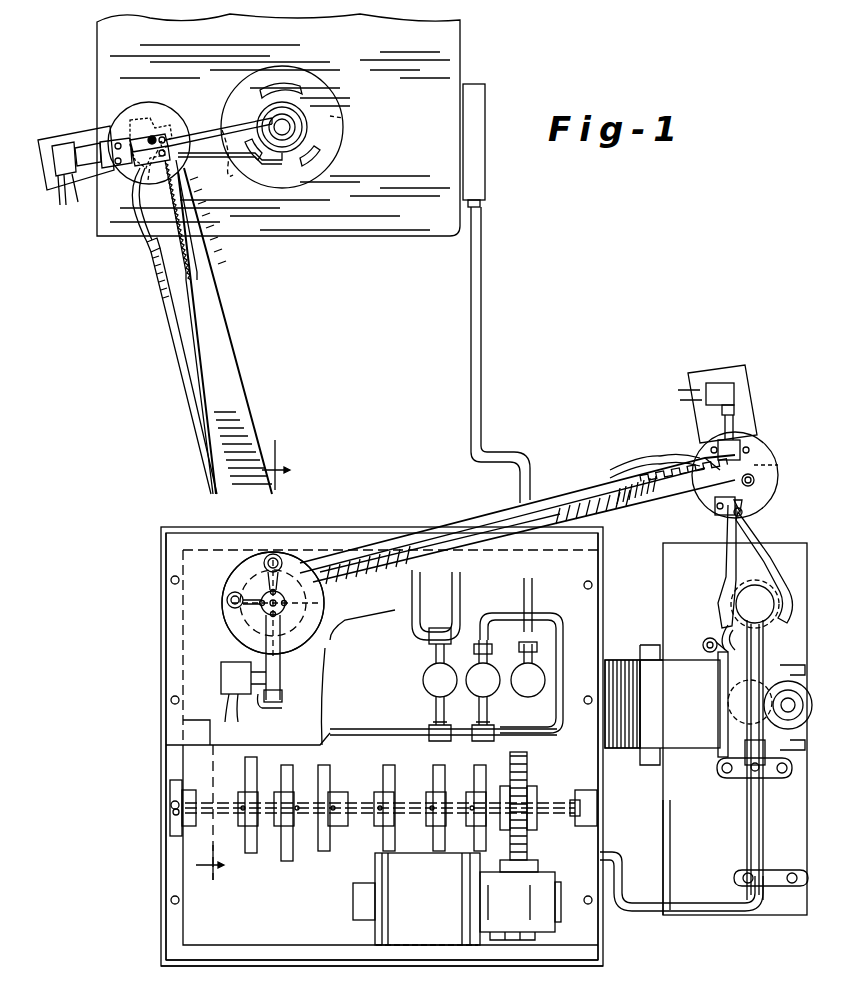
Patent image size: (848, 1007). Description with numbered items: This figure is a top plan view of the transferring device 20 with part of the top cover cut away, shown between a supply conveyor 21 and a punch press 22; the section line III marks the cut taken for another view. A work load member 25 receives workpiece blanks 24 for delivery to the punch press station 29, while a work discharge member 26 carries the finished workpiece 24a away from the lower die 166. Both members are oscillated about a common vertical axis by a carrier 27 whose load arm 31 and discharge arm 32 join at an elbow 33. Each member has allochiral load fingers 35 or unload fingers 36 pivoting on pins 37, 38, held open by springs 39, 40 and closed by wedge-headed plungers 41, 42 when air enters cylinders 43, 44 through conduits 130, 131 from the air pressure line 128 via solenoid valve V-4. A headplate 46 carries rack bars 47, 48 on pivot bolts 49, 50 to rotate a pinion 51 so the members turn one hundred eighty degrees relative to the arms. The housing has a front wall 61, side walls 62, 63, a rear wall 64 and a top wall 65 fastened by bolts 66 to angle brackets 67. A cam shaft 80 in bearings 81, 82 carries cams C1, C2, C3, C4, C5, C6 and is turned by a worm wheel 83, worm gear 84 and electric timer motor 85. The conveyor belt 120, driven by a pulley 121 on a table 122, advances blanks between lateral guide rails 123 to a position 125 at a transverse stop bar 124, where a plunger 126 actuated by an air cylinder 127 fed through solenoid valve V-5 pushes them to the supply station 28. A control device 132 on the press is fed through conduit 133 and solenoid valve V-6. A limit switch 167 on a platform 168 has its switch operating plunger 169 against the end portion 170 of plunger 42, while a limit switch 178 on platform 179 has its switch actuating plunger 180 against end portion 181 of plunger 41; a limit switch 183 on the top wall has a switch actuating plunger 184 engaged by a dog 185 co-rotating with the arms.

The transferring device 20 is at (158, 881).
The supply conveyor 21 is at (620, 768).
The punch press 22 is at (466, 46).
The workpiece blank 24 is at (785, 668).
The finished workpiece 24a is at (300, 132).
The work load member 25 is at (768, 458).
The work discharge member 26 is at (127, 104).
The carrier 27 is at (290, 512).
The supply station 28 is at (733, 585).
The punch press station 29 is at (305, 110).
The load arm 31 is at (582, 480).
The discharge arm 32 is at (244, 360).
The elbow 33 is at (223, 612).
The load fingers 35 is at (797, 540).
The unload fingers 36 is at (219, 163).
The pin 37 is at (726, 535).
The pin 38 is at (226, 127).
The spring 39 is at (760, 516).
The spring 40 is at (250, 140).
The wedge-headed plunger 41 is at (735, 476).
The wedge-headed plunger 42 is at (155, 180).
The cylinder 43 is at (712, 440).
The cylinder 44 is at (110, 160).
The headplate 46 is at (235, 642).
The rack bar 47 is at (500, 515).
The rack bar 48 is at (188, 358).
The pivot bolt 49 is at (265, 555).
The pivot bolt 50 is at (222, 600).
The pinion 51 is at (151, 138).
The front wall 61 is at (385, 963).
The side wall 62 is at (164, 762).
The side wall 63 is at (598, 940).
The rear wall 64 is at (376, 530).
The top wall 65 is at (180, 612).
The bolts 66 is at (180, 708).
The angle brackets 67 is at (162, 940).
The cam shaft 80 is at (222, 795).
The bearing 81 is at (160, 805).
The bearing 82 is at (600, 802).
The worm wheel 83 is at (548, 746).
The worm gear 84 is at (540, 862).
The electric timer motor 85 is at (375, 868).
The conveyor belt 120 is at (714, 757).
The pulley 121 is at (632, 660).
The table 122 is at (668, 826).
The lateral guide rails 123 is at (800, 778).
The transverse stop bar 124 is at (726, 670).
The position 125 is at (724, 725).
The plunger 126 is at (720, 640).
The air cylinder 127 is at (748, 822).
The air pressure line 128 is at (342, 730).
The conduit 130 is at (660, 460).
The conduit 131 is at (143, 232).
The control device 132 is at (486, 165).
The conduit 133 is at (482, 305).
The lower die 166 is at (343, 116).
The limit switch 167 is at (65, 140).
The platform 168 is at (50, 180).
The switch operating plunger 169 is at (67, 145).
The end portion 170 is at (88, 148).
The limit switch 178 is at (728, 382).
The platform 179 is at (708, 370).
The switch actuating plunger 180 is at (738, 412).
The end portion 181 is at (740, 420).
The limit switch 183 is at (222, 678).
The switch actuating plunger 184 is at (272, 708).
The dog 185 is at (284, 692).
The cam C1 is at (245, 772).
The cam C2 is at (293, 776).
The cam C3 is at (330, 775).
The cam C4 is at (376, 770).
The cam C5 is at (430, 770).
The cam C6 is at (474, 770).
The solenoid valve V-4 is at (440, 692).
The solenoid valve V-5 is at (483, 690).
The solenoid valve V-6 is at (528, 669).
The section line III is at (255, 660).